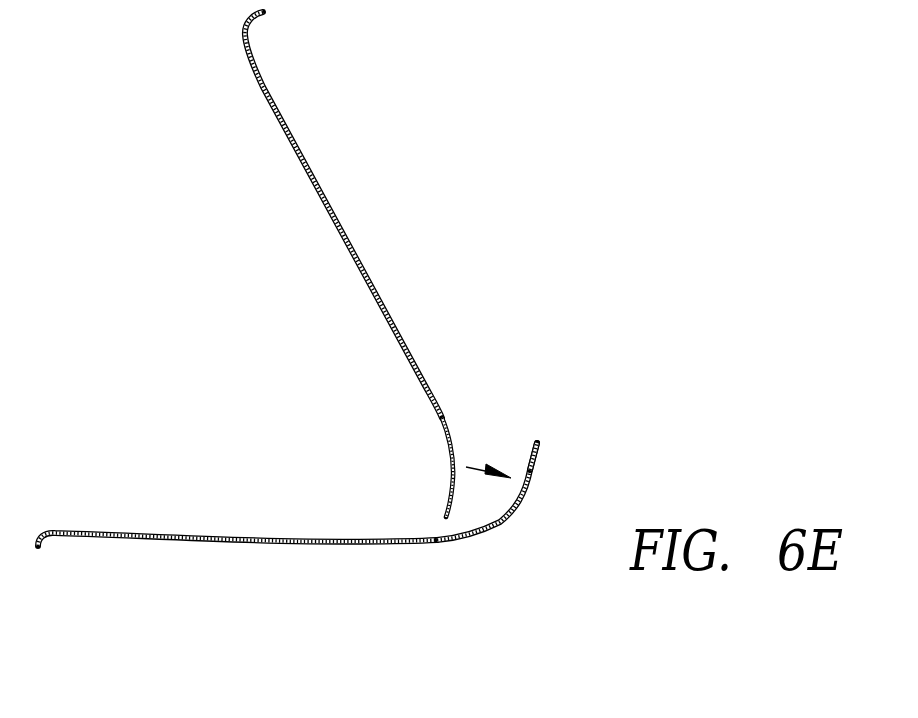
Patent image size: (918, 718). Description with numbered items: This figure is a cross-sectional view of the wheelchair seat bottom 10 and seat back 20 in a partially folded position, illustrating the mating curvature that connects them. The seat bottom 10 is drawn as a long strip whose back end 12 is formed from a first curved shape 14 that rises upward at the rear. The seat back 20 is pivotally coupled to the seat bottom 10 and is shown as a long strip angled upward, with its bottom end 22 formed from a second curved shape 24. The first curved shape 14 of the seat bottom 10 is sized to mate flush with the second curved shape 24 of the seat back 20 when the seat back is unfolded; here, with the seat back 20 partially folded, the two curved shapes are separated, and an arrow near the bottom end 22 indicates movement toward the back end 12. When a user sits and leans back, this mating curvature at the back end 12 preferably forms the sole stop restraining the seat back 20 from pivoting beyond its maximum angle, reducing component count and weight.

The seat bottom 10 is at (256, 543).
The back end 12 is at (501, 524).
The first curved shape 14 is at (522, 452).
The seat back 20 is at (363, 261).
The bottom end 22 is at (453, 478).
The second curved shape 24 is at (458, 418).